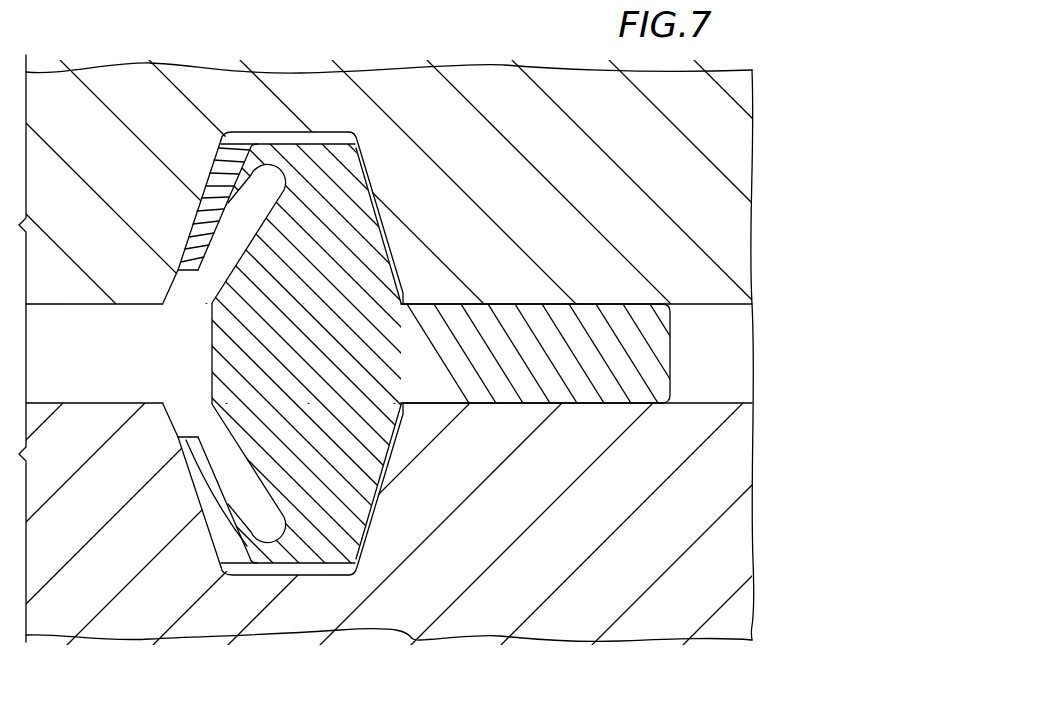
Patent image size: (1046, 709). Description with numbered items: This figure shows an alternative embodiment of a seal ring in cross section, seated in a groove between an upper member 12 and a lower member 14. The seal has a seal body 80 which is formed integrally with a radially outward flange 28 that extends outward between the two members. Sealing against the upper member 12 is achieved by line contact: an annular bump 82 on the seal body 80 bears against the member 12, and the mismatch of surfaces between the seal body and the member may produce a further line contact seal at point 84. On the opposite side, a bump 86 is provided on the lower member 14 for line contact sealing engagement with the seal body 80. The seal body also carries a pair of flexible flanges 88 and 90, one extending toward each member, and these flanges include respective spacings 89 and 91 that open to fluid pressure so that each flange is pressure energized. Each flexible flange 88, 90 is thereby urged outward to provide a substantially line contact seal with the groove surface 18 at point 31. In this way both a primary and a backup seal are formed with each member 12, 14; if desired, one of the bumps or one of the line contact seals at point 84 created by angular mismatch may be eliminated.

The member 12 is at (722, 213).
The lower member 14 is at (722, 492).
The groove surface 18 is at (172, 403).
The radially outward flange 28 is at (640, 352).
The point 31 is at (176, 269).
The seal body 80 is at (245, 346).
The annular bump 82 is at (358, 158).
The point 84 is at (400, 430).
The bump 86 is at (360, 545).
The flexible flange 88 is at (218, 215).
The spacing 89 is at (258, 187).
The flexible flange 90 is at (213, 552).
The spacing 91 is at (238, 477).